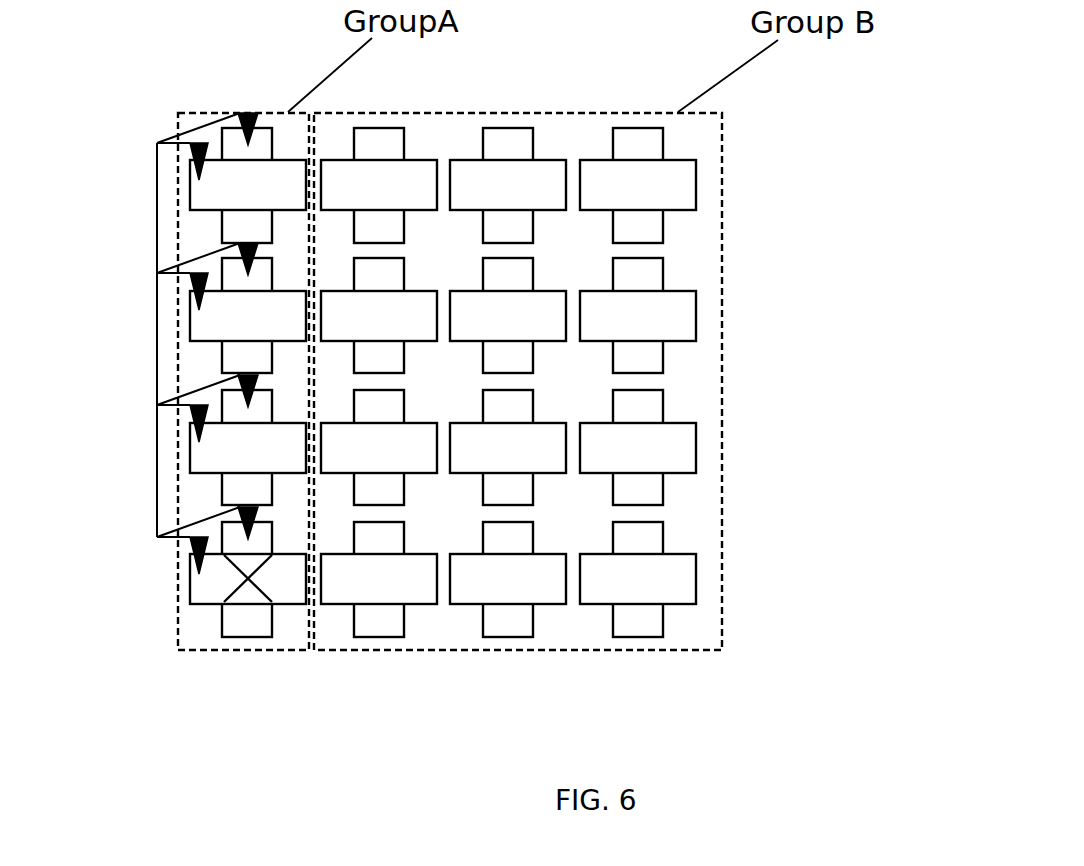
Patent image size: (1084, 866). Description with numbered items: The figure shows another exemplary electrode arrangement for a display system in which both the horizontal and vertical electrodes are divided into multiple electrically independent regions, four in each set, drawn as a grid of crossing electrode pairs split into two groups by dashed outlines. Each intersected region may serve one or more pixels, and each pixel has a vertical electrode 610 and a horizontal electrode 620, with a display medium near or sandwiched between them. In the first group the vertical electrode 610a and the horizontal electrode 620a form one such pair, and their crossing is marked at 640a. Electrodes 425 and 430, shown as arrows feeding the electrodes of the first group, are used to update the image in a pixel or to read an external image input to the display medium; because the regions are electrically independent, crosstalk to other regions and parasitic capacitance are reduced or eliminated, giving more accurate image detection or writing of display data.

The electrode 425 is at (233, 302).
The electrode 430 is at (158, 343).
The vertical electrode 610 is at (647, 617).
The horizontal electrode 620 is at (647, 569).
The first conductive line of Group A 610a is at (242, 625).
The second conductive line of Group A 620a is at (228, 579).
The selected memory cell 640a is at (248, 579).